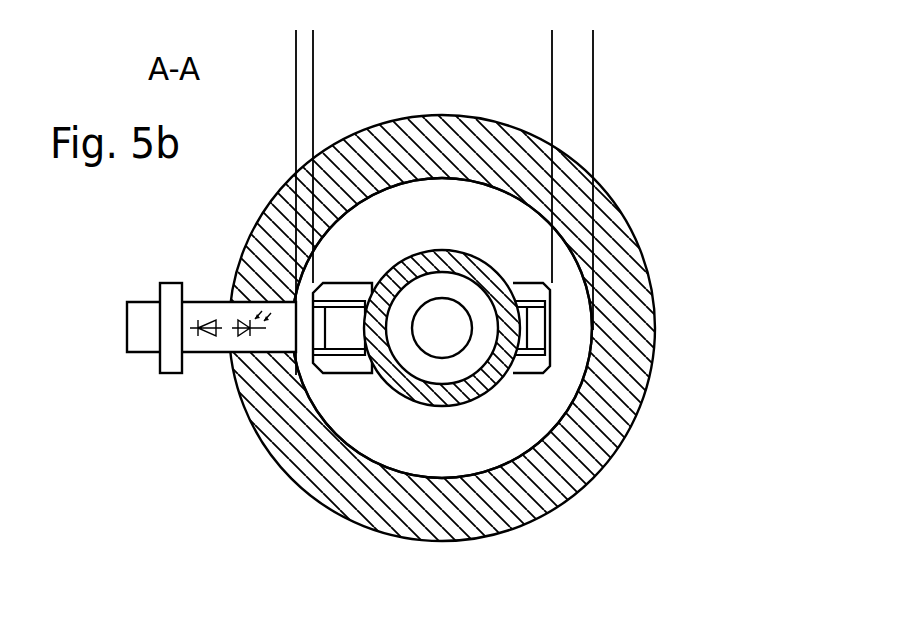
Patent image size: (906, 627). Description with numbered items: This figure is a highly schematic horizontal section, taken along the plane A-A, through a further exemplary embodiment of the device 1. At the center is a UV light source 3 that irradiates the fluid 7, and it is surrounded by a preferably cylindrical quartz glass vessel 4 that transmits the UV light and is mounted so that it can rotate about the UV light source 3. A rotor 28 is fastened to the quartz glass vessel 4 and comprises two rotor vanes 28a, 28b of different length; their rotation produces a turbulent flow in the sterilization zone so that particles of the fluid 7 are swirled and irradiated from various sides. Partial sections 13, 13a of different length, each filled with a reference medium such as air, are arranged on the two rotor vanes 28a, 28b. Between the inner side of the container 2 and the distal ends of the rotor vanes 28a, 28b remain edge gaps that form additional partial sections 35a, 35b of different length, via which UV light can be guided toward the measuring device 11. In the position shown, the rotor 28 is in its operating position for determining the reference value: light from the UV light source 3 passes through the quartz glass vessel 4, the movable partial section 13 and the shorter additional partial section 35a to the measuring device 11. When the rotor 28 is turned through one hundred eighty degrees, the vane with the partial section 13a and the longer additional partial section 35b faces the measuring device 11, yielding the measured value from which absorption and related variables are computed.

The device 1 is at (410, 332).
The container 2 is at (625, 240).
The UV light source 3 is at (443, 327).
The quartz glass vessel 4 is at (432, 262).
The fluid 7 is at (447, 456).
The measuring device 11 is at (137, 279).
The partial section 13 is at (347, 327).
The partial section 13a is at (537, 372).
The rotor 28 is at (450, 442).
The rotor vane 28a is at (251, 442).
The rotor vane 28b is at (627, 442).
The additional partial section 35a is at (345, 45).
The additional partial section 35b is at (625, 45).